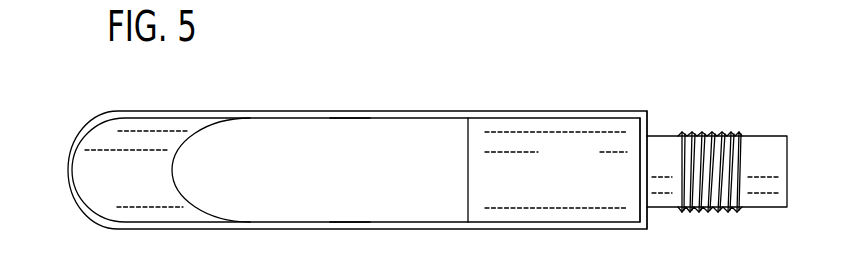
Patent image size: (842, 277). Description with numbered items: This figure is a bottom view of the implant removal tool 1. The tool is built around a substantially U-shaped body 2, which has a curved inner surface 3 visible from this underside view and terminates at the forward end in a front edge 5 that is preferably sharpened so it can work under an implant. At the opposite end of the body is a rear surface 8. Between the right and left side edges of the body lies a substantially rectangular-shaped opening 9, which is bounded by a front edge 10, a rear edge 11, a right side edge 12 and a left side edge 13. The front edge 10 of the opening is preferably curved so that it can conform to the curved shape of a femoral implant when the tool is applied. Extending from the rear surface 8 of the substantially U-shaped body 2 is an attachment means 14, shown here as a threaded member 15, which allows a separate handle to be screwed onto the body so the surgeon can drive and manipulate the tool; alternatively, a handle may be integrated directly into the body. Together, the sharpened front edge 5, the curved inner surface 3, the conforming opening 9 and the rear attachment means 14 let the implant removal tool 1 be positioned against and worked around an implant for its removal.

The implant removal tool 1 is at (703, 72).
The substantially U-shaped body 2 is at (190, 111).
The curved inner surface 3 is at (108, 177).
The front edge 5 is at (80, 142).
The rear surface 8 is at (648, 117).
The substantially rectangular-shaped opening 9 is at (468, 162).
The front edge 10 is at (173, 167).
The rear edge 11 is at (468, 195).
The right side edge 12 is at (350, 119).
The left side edge 13 is at (350, 221).
The attachment means 14 is at (728, 195).
The threaded member 15 is at (705, 213).